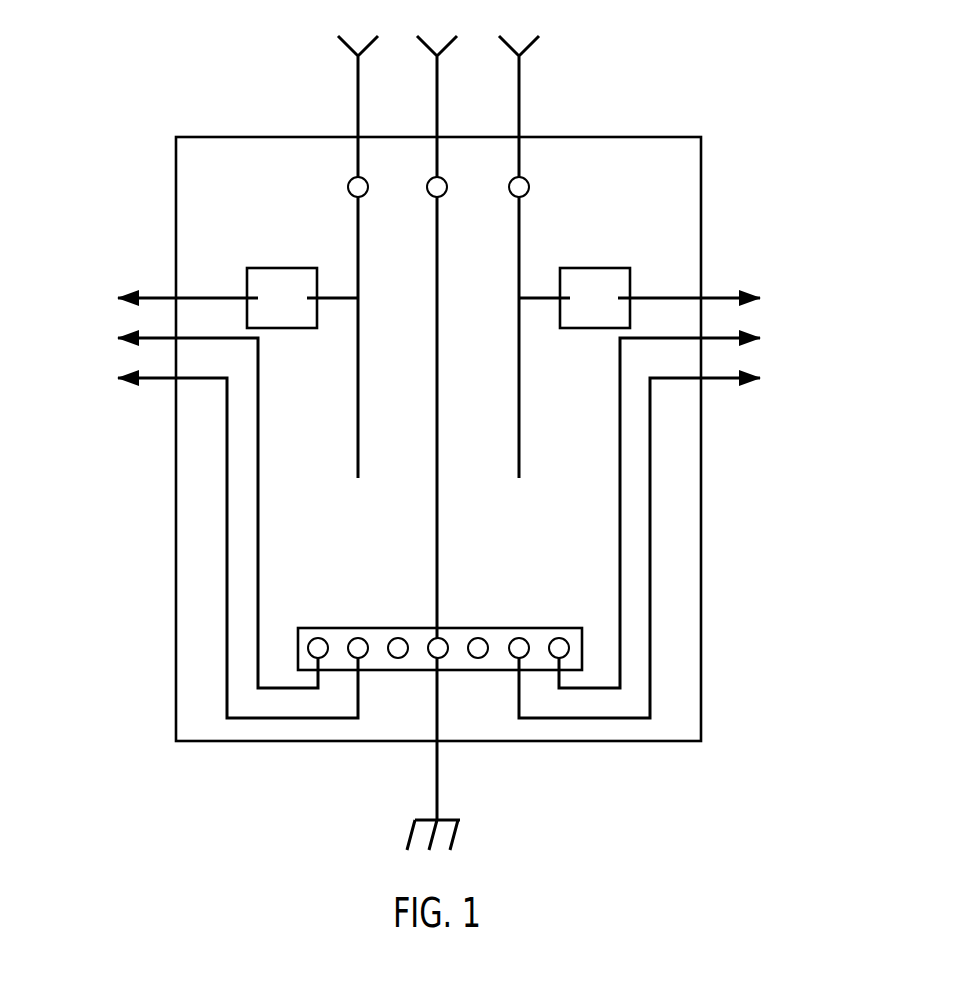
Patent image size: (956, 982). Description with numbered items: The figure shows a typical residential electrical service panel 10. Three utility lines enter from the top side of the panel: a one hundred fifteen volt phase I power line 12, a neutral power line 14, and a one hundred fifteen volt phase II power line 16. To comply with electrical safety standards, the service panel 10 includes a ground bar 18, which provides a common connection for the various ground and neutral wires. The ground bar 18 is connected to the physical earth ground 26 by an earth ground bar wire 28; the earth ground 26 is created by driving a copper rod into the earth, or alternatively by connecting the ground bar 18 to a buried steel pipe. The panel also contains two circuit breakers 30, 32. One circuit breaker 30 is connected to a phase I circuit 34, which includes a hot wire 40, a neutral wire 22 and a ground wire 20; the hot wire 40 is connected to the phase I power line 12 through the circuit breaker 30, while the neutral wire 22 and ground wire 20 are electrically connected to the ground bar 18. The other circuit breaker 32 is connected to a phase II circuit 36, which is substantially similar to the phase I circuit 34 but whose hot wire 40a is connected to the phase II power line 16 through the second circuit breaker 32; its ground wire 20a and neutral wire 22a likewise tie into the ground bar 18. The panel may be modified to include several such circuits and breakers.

The electrical service panel 10 is at (709, 180).
The 115V phase I power line 12 is at (358, 245).
The neutral power line 14 is at (437, 330).
The 115V phase II power line 16 is at (519, 245).
The ground bar 18 is at (508, 616).
The ground wire 20 is at (213, 542).
The neutral wire 22 is at (193, 507).
The hot wire 40 is at (213, 298).
The ground wire 20a is at (668, 542).
The neutral wire 22a is at (688, 507).
The hot wire 40a is at (668, 298).
The earth ground 26 is at (476, 820).
The earth ground bar wire 28 is at (454, 712).
The circuit breaker 30 is at (288, 258).
The circuit breaker 32 is at (597, 258).
The phase I circuit 34 is at (204, 469).
The phase II circuit 36 is at (687, 467).